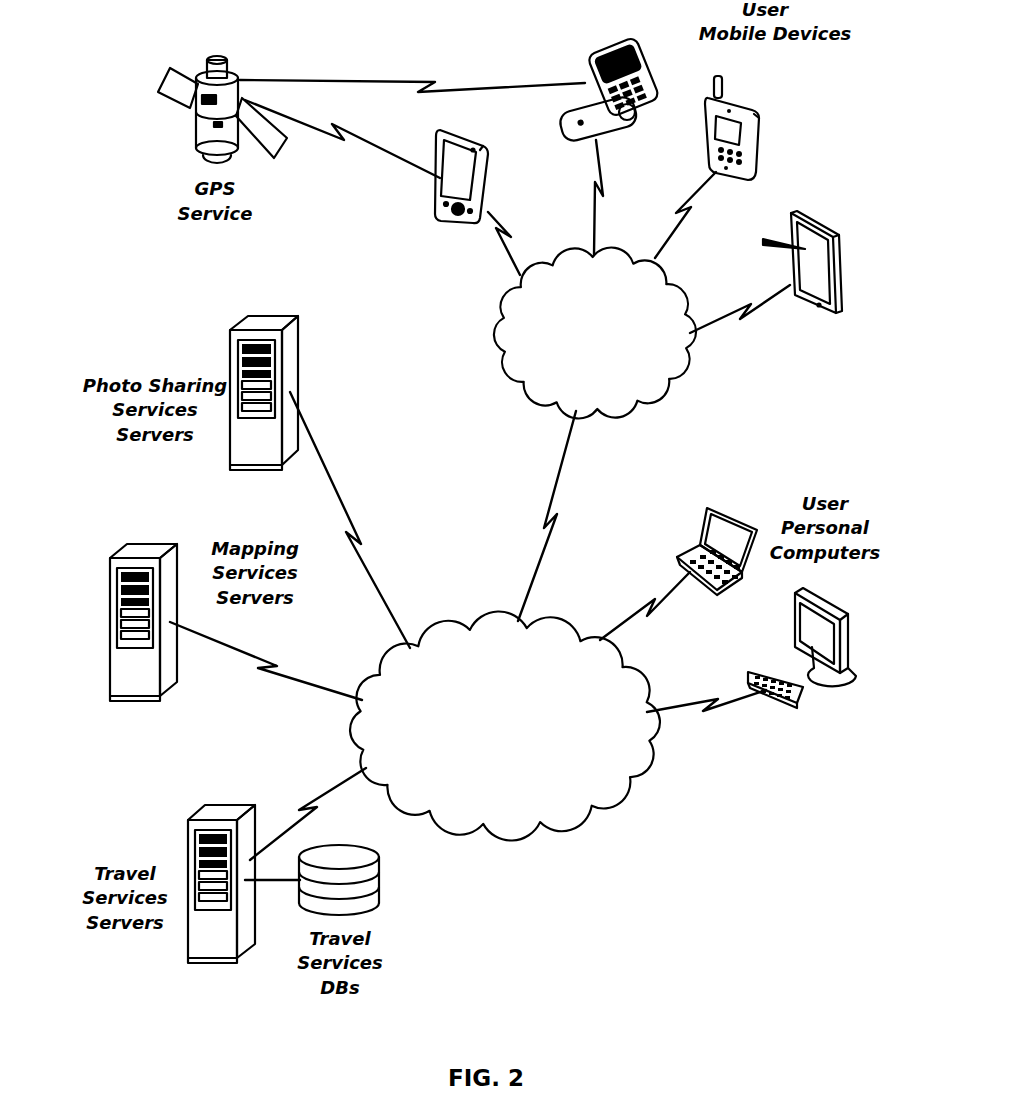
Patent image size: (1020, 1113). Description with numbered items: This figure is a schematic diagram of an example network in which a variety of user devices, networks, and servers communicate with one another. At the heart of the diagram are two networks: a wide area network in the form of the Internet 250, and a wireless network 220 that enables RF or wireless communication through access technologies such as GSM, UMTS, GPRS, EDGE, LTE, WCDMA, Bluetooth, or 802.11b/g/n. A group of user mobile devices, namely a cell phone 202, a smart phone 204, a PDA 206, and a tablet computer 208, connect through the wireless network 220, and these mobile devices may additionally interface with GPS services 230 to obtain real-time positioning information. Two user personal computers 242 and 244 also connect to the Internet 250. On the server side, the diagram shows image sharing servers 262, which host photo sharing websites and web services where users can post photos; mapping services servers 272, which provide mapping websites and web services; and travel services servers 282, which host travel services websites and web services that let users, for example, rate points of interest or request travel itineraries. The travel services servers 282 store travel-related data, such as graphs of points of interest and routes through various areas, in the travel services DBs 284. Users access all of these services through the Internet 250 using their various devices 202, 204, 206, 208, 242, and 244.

The cell phone 202 is at (604, 62).
The smart phone 204 is at (760, 128).
The PDA 206 is at (434, 184).
The tablet computer 208 is at (843, 272).
The wireless network 220 is at (500, 332).
The GPS services 230 is at (192, 138).
The user personal computer 242 is at (706, 524).
The user personal computer 244 is at (796, 617).
The Internet 250 is at (622, 780).
The image sharing servers 262 is at (230, 344).
The mapping services servers 272 is at (110, 582).
The travel services servers 282 is at (190, 834).
The travel services DBs 284 is at (382, 868).